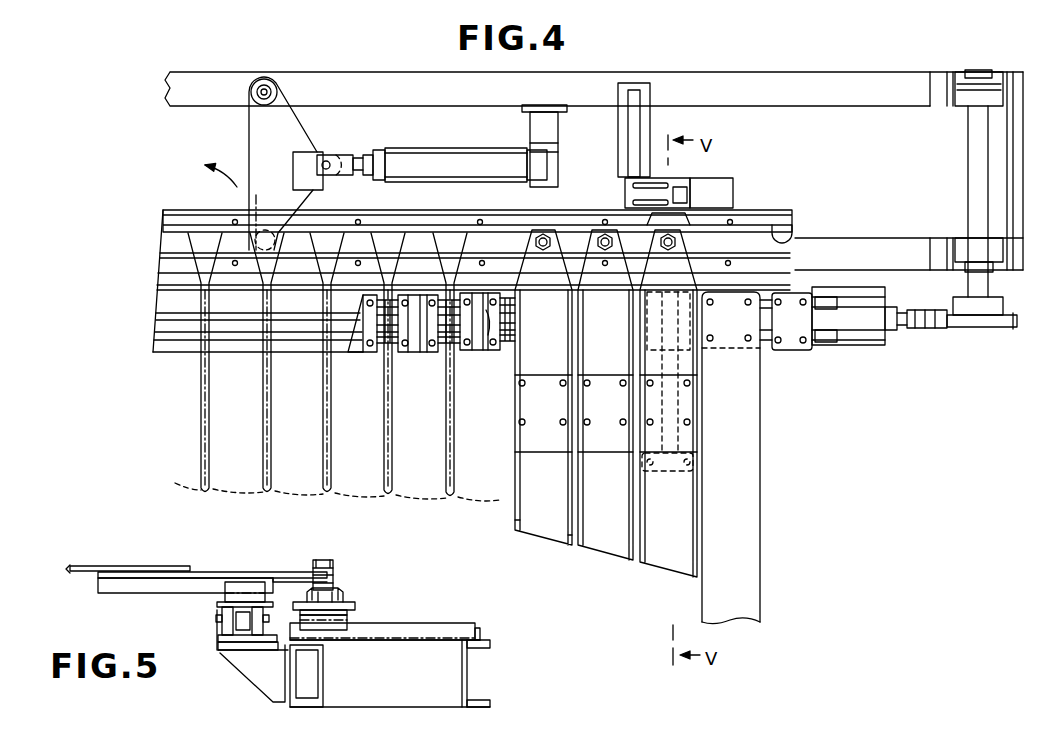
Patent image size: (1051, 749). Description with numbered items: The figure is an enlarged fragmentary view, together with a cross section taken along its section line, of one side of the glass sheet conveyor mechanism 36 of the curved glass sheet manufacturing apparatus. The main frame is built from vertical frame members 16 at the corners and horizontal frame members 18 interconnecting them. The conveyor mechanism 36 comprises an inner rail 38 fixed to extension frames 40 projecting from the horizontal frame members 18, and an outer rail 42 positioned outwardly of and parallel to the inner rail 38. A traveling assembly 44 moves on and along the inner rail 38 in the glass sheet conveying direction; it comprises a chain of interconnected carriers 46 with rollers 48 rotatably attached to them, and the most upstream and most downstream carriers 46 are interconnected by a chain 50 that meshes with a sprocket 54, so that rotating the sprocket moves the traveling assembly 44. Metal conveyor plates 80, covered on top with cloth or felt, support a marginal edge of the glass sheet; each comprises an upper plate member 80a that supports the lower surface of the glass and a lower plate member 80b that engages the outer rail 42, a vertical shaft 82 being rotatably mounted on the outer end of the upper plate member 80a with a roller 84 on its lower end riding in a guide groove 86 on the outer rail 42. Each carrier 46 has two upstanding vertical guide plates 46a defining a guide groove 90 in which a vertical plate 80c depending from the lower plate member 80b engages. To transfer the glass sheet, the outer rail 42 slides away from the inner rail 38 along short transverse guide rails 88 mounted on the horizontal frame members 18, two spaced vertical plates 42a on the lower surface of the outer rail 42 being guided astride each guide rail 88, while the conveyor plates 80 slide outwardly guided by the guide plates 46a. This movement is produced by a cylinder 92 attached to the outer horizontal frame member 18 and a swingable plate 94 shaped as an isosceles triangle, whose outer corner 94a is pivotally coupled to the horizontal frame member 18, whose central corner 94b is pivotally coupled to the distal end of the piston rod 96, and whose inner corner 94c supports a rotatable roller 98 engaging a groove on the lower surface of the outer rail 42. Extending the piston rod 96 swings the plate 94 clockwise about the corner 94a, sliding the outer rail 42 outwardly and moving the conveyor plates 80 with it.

In FIG. 4, the vertical frame members 16 is at (955, 75).
In FIG. 4, the horizontal frame members 18 is at (798, 83).
In FIG. 5, the horizontal frame members 18 is at (307, 688).
In FIG. 4, the glass sheet conveyor mechanism 36 is at (775, 373).
In FIG. 4, the inner rails 38 is at (862, 337).
In FIG. 5, the inner rails 38 is at (248, 650).
In FIG. 5, the extension frames 40 is at (258, 668).
In FIG. 4, the outer rails 42 is at (760, 217).
In FIG. 5, the outer rails 42 is at (352, 610).
In FIG. 5, the vertical plates 42a is at (330, 630).
In FIG. 4, the traveling assembly 44 is at (358, 362).
In FIG. 4, the carriers 46 is at (420, 345).
In FIG. 5, the carriers 46 is at (217, 603).
In FIG. 4, the vertical guide plates 46a is at (498, 352).
In FIG. 5, the vertical guide plates 46a is at (232, 582).
In FIG. 4, the rollers 48 is at (383, 352).
In FIG. 4, the chain 50 is at (942, 329).
In FIG. 4, the sprocket 54 is at (977, 310).
In FIG. 4, the conveyor plates 80 is at (680, 555).
In FIG. 5, the conveyor plates 80 is at (164, 557).
In FIG. 4, the upper plate member 80a is at (662, 552).
In FIG. 5, the upper plate member 80a is at (117, 566).
In FIG. 4, the lower plate member 80b is at (653, 438).
In FIG. 5, the lower plate member 80b is at (242, 575).
In FIG. 4, the vertical plate 80c is at (677, 440).
In FIG. 5, the vertical plate 80c is at (148, 593).
In FIG. 5, the vertical shaft 82 is at (330, 592).
In FIG. 5, the roller 84 is at (320, 560).
In FIG. 4, the guide groove 86 is at (793, 230).
In FIG. 5, the guide groove 86 is at (345, 602).
In FIG. 4, the transverse guide rails 88 is at (638, 130).
In FIG. 5, the transverse guide rails 88 is at (443, 624).
In FIG. 4, the guide groove 90 is at (488, 320).
In FIG. 4, the cylinder 92 is at (440, 157).
In FIG. 4, the swingable plate 94 is at (277, 143).
In FIG. 4, the outer corner 94a is at (282, 80).
In FIG. 4, the central corner 94b is at (326, 160).
In FIG. 4, the inner corner 94c is at (282, 232).
In FIG. 4, the piston rod 96 is at (360, 158).
In FIG. 4, the roller 98 is at (258, 232).